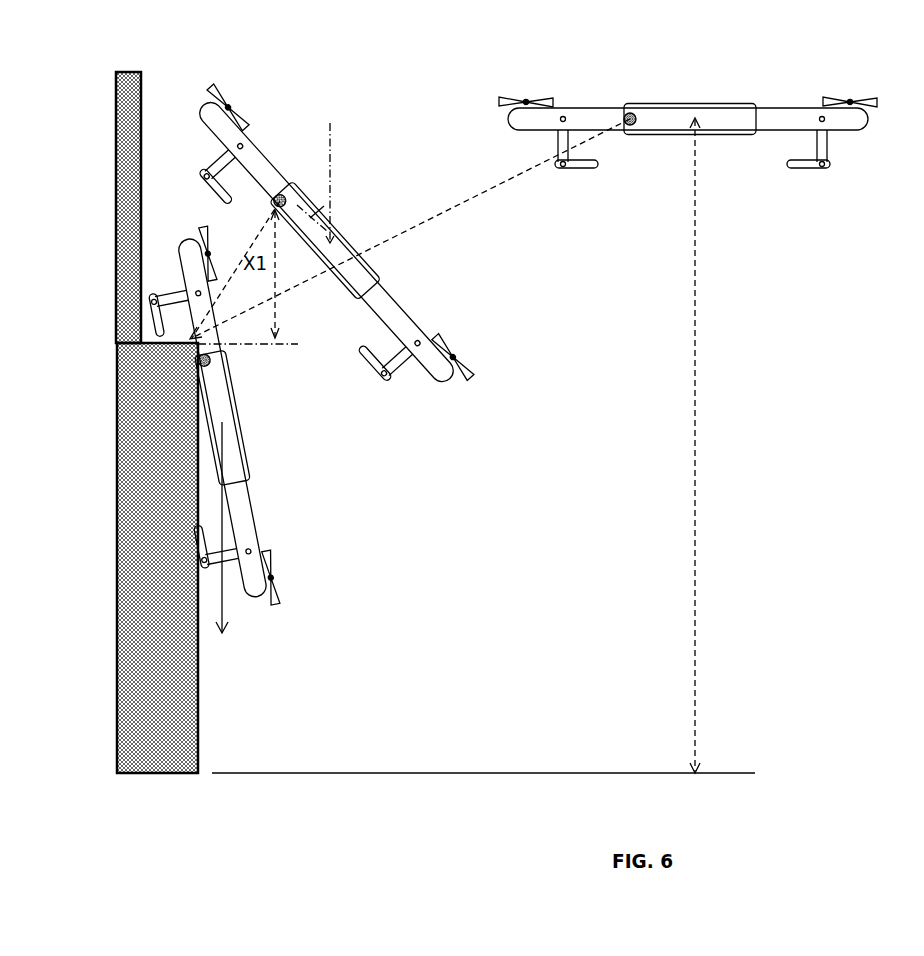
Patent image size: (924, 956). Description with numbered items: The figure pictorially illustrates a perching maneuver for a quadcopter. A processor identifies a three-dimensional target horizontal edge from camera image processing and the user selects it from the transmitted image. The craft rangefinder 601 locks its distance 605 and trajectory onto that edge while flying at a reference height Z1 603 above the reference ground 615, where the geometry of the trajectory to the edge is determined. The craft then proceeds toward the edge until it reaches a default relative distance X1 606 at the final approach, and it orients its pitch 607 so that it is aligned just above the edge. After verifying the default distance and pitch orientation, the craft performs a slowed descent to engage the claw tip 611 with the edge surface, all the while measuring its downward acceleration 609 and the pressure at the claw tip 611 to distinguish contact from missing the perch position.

The craft rangefinder 601 is at (688, 107).
The reference height Z1 603 is at (724, 445).
The distance 605 is at (410, 229).
The default distance X1 606 is at (263, 310).
The pitch 607 is at (318, 252).
The downward acceleration 609 is at (255, 429).
The claw tip 611 is at (125, 422).
The reference ground 615 is at (483, 733).